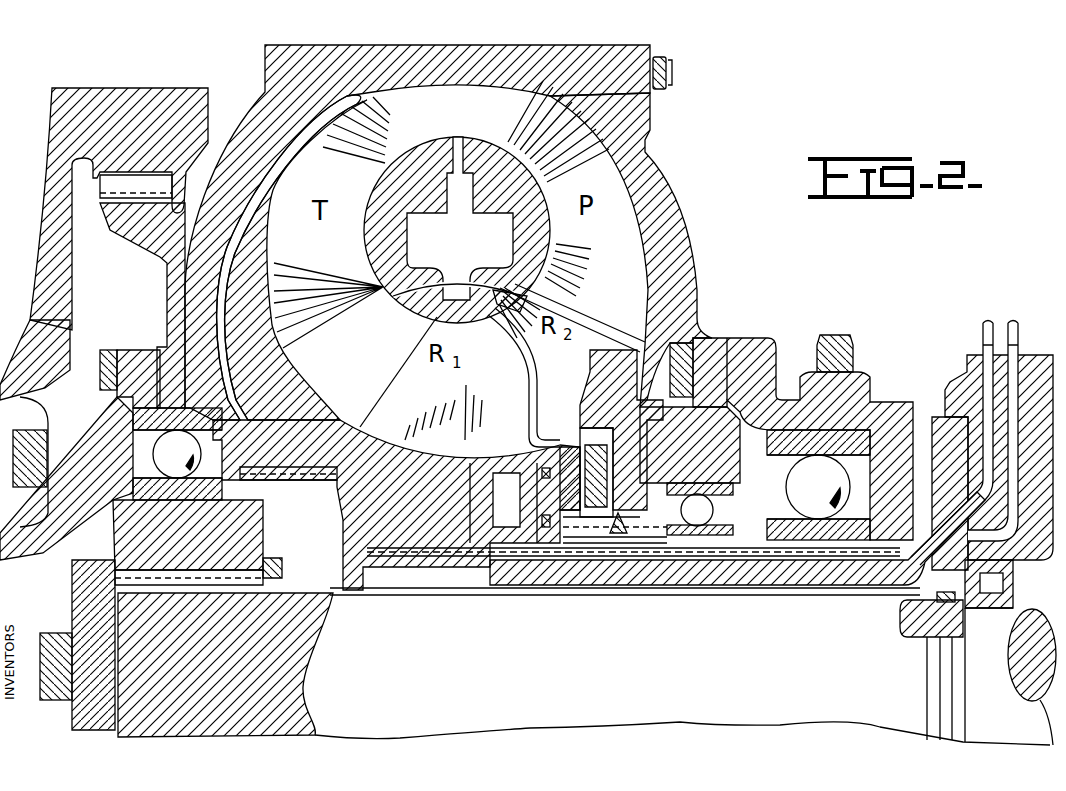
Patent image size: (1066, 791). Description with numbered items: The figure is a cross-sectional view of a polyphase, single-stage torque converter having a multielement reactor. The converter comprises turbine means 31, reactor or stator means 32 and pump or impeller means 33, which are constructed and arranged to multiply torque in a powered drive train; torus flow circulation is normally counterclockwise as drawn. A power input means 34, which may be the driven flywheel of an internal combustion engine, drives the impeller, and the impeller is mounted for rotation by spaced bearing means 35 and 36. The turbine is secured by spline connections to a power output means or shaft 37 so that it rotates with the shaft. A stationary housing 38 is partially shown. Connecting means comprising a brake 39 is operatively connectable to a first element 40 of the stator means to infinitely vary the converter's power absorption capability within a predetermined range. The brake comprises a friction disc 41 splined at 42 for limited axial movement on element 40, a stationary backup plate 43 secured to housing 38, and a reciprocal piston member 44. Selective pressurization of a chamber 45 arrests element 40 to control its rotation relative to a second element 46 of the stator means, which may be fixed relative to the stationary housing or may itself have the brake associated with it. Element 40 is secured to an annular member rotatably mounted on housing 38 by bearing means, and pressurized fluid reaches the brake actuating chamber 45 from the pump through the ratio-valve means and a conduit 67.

The turbine means 31 is at (266, 285).
The reactor or stator means 32 is at (442, 489).
The pump or impeller means 33 is at (643, 185).
The power input means 34 is at (106, 88).
The bearing means 35 is at (846, 446).
The bearing means 36 is at (142, 454).
The power output means or shaft 37 is at (594, 704).
The stationary housing 38 is at (962, 360).
The brake 39 is at (618, 438).
The first element 40 is at (600, 368).
The friction disc 41 is at (595, 462).
The spline 42 is at (572, 432).
The stationary backup plate 43 is at (650, 522).
The reciprocal piston member 44 is at (542, 530).
The chamber 45 is at (507, 527).
The second element 46 is at (437, 404).
The conduit 67 is at (822, 580).